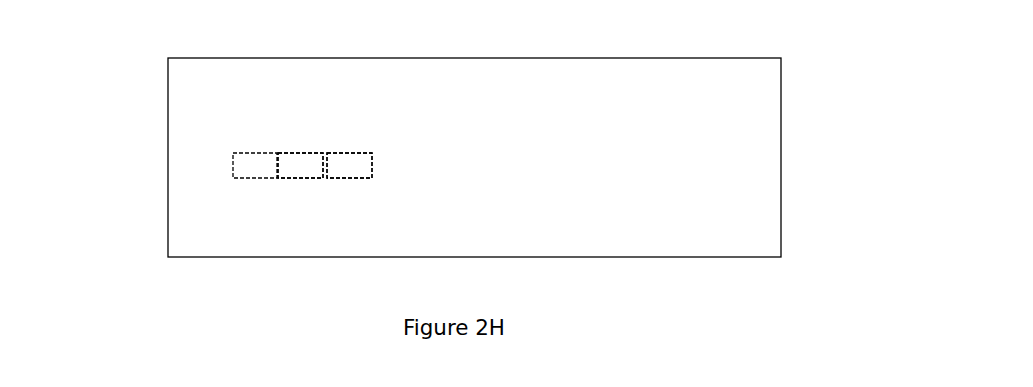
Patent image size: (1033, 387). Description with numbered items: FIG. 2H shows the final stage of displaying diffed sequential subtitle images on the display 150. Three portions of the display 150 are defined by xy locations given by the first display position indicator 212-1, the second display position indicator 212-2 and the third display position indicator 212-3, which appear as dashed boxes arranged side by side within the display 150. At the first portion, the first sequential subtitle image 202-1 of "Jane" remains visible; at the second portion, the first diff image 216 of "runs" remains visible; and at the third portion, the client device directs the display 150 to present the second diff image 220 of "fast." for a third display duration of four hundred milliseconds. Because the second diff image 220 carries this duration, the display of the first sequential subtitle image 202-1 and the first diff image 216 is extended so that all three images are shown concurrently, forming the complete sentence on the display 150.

The display 150 is at (781, 165).
The first sequential subtitle image 202-1 is at (243, 172).
The first display position indicator 212-1 is at (255, 178).
The second display position indicator 212-2 is at (315, 178).
The third display position indicator 212-3 is at (365, 178).
The first diff image 216 is at (290, 155).
The second diff image 220 is at (350, 155).